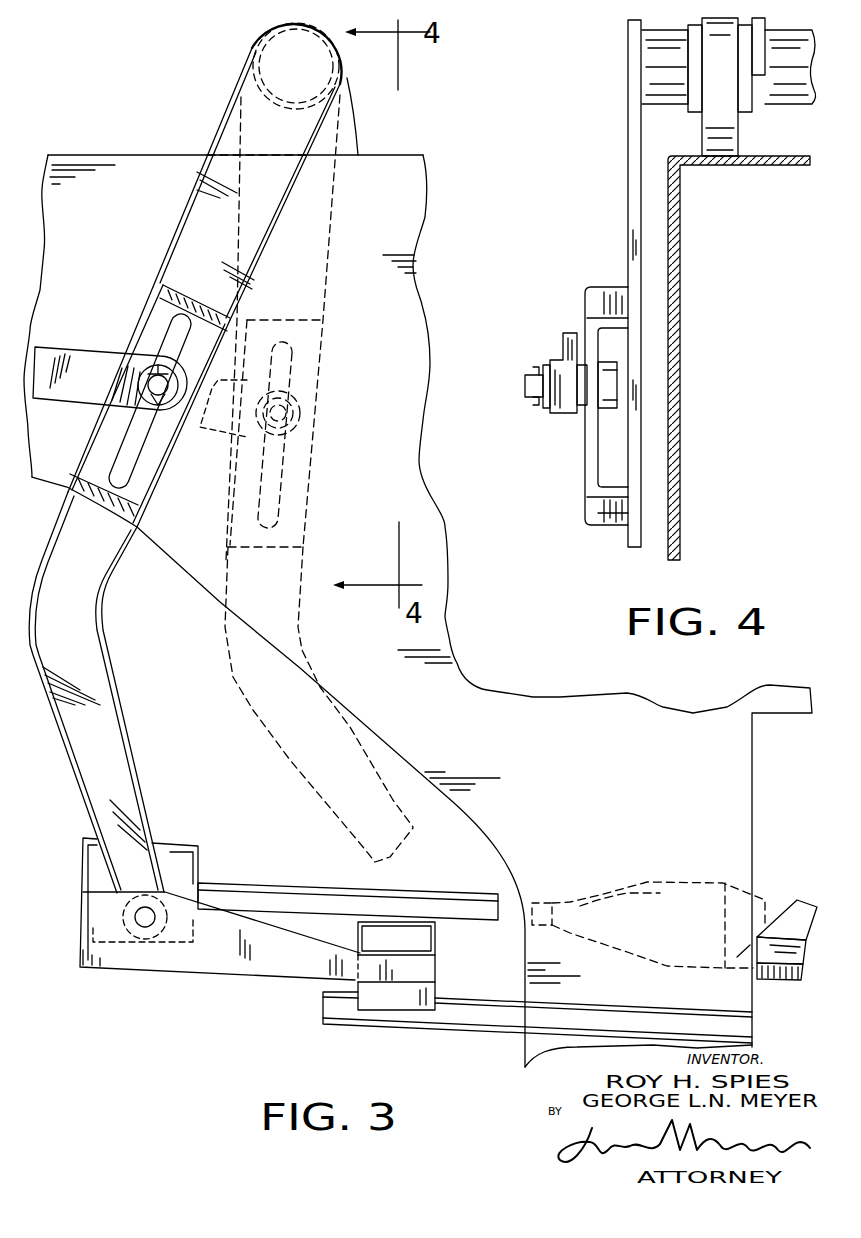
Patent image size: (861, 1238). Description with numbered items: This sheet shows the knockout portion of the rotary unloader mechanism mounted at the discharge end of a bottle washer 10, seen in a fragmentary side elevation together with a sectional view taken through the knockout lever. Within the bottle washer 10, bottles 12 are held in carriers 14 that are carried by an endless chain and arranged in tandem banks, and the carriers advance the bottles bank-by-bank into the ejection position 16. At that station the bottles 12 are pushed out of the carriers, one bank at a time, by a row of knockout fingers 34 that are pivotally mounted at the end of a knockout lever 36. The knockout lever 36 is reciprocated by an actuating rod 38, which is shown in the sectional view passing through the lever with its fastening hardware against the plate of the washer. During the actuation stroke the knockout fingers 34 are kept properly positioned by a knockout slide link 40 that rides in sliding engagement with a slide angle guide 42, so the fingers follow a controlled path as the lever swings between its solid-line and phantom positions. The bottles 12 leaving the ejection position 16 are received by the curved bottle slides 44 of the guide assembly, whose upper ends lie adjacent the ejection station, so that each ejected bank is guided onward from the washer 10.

In FIG. 3, the bottle washer 10 is at (103, 147).
In FIG. 4, the bottle washer 10 is at (681, 232).
In FIG. 3, the bottles 12 is at (576, 898).
In FIG. 3, the carriers 14 is at (663, 881).
In FIG. 3, the ejection position 16 is at (775, 894).
In FIG. 3, the knockout fingers 34 is at (308, 893).
In FIG. 3, the knockout lever 36 is at (83, 647).
In FIG. 4, the knockout lever 36 is at (628, 210).
In FIG. 3, the actuating rod 38 is at (78, 365).
In FIG. 4, the actuating rod 38 is at (563, 340).
In FIG. 3, the knockout slide link 40 is at (227, 960).
In FIG. 3, the slide angle guide 42 is at (450, 1020).
In FIG. 3, the curved bottle slides 44 is at (772, 991).